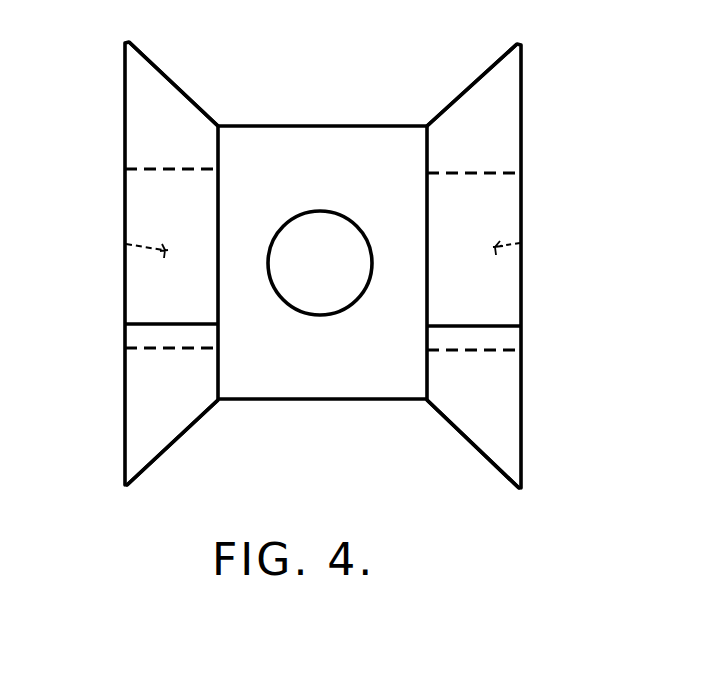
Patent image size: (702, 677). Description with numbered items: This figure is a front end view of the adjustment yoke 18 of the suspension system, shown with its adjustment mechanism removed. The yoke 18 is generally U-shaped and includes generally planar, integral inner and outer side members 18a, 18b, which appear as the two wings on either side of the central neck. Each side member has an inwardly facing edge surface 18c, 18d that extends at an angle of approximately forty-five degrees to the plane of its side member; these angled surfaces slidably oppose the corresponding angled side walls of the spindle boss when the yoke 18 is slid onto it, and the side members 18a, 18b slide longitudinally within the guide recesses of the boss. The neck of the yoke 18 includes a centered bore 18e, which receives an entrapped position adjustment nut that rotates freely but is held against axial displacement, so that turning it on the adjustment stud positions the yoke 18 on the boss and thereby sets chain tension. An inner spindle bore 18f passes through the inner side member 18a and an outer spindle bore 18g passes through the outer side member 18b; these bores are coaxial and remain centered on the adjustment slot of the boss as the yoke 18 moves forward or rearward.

The adjustment yoke 18 is at (523, 123).
The inner side member 18a is at (123, 372).
The outer side member 18b is at (523, 378).
The inwardly facing edge surface 18c is at (190, 98).
The inwardly facing edge surface 18d is at (462, 92).
The centered bore 18e is at (340, 316).
The inner spindle bore 18f is at (123, 243).
The outer spindle bore 18g is at (522, 241).